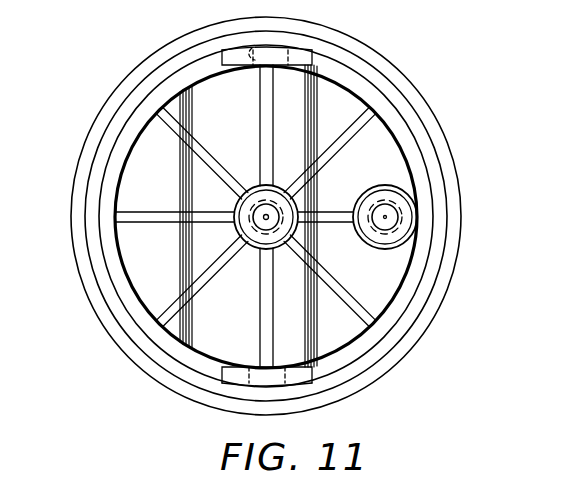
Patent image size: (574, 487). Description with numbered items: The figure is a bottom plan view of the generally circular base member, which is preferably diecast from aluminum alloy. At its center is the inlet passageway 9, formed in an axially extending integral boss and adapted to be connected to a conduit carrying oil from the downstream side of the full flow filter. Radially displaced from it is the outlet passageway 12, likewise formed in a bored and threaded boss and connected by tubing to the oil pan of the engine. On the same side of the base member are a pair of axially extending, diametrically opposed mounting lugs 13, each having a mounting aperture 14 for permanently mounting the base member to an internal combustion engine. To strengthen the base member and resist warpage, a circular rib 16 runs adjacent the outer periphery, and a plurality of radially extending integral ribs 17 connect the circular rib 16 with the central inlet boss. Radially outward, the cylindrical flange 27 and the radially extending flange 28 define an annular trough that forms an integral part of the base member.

The inlet passageway 9 is at (268, 213).
The outlet passageway 12 is at (380, 233).
The mounting lugs 13 is at (303, 55).
The mounting aperture 14 is at (262, 42).
The circular rib 16 is at (126, 162).
The radially extending integral ribs 17 is at (212, 152).
The cylindrical flange 27 is at (104, 115).
The radially extending flange 28 is at (73, 223).